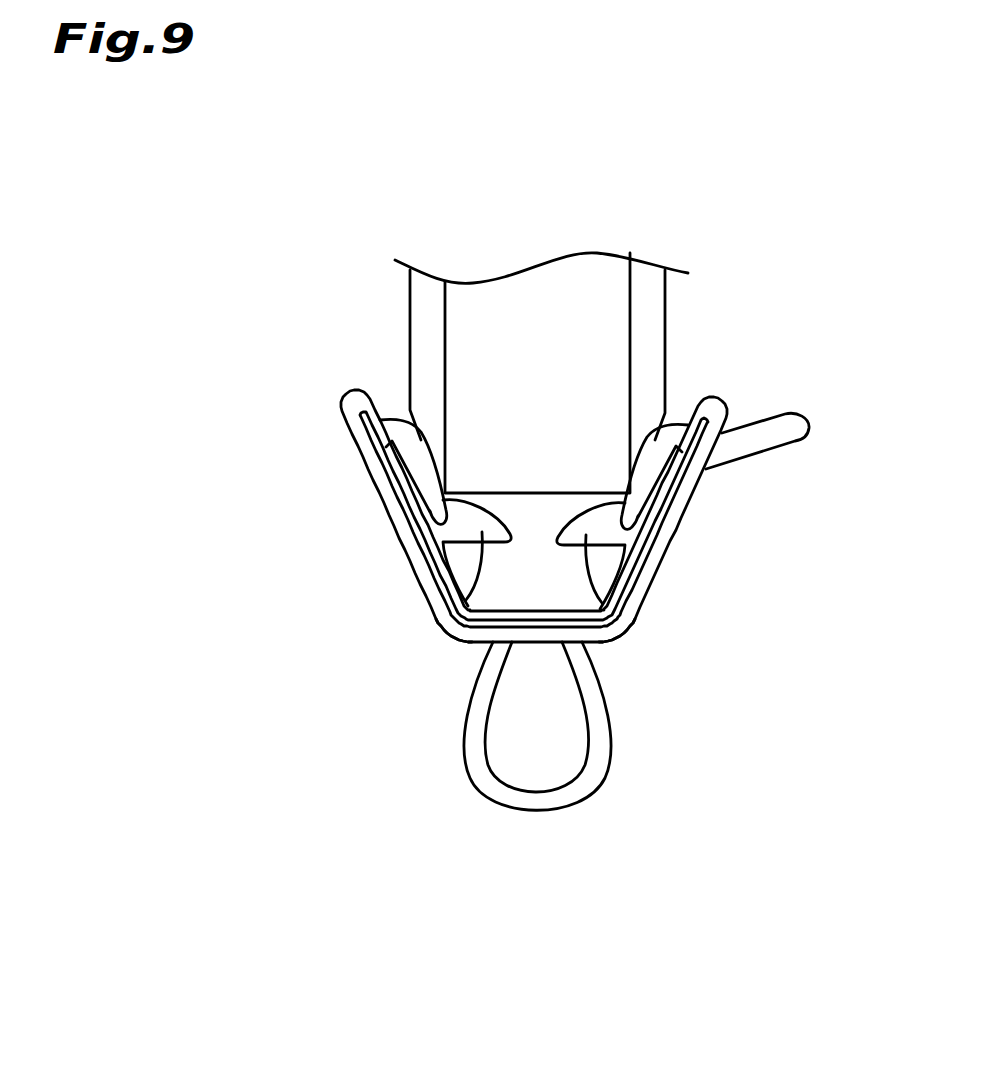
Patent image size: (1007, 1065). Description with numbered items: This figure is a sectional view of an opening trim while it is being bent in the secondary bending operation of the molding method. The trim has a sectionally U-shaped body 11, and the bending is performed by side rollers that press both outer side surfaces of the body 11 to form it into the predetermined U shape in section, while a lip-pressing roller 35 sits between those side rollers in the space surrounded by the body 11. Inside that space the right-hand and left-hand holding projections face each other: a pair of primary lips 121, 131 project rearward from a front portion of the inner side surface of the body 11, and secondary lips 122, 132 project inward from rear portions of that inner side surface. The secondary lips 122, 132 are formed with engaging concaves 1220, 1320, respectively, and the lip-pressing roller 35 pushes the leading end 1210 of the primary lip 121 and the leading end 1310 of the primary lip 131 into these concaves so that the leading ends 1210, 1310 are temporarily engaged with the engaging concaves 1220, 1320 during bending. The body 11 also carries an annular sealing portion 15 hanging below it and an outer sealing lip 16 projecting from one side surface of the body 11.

The body 11 is at (647, 587).
The annular sealing portion 15 is at (543, 802).
The outer sealing lip 16 is at (790, 432).
The lip-pressing roller 35 is at (608, 329).
The primary lip 121 is at (440, 486).
The leading end 1210 is at (432, 514).
The engaging concave 1220 is at (432, 513).
The secondary lip 122 is at (452, 622).
The primary lip 131 is at (652, 470).
The leading end 1310 is at (637, 520).
The engaging concave 1320 is at (647, 533).
The secondary lip 132 is at (632, 615).